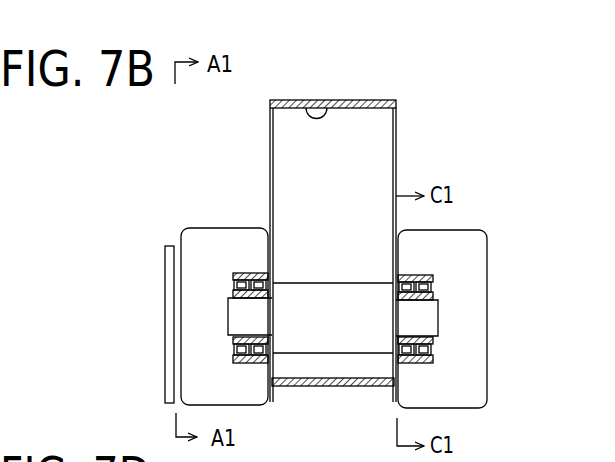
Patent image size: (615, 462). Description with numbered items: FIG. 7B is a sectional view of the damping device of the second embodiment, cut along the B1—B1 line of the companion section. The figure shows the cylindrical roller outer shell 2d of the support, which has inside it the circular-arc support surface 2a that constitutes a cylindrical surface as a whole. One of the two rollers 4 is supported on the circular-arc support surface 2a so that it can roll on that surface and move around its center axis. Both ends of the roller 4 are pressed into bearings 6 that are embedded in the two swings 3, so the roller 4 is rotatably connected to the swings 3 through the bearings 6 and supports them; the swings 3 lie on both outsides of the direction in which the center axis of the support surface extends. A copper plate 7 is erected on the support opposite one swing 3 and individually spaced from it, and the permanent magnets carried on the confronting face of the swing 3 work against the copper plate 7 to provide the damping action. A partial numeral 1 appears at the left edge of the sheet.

The motor unit 1 is at (6, 289).
The circular-arc support surface 2a is at (309, 108).
The cylindrical roller outer shell 2d is at (372, 99).
The swing 3 is at (208, 228).
The roller 4 is at (438, 320).
The bearing 6 is at (245, 273).
The copper plate 7 is at (165, 330).